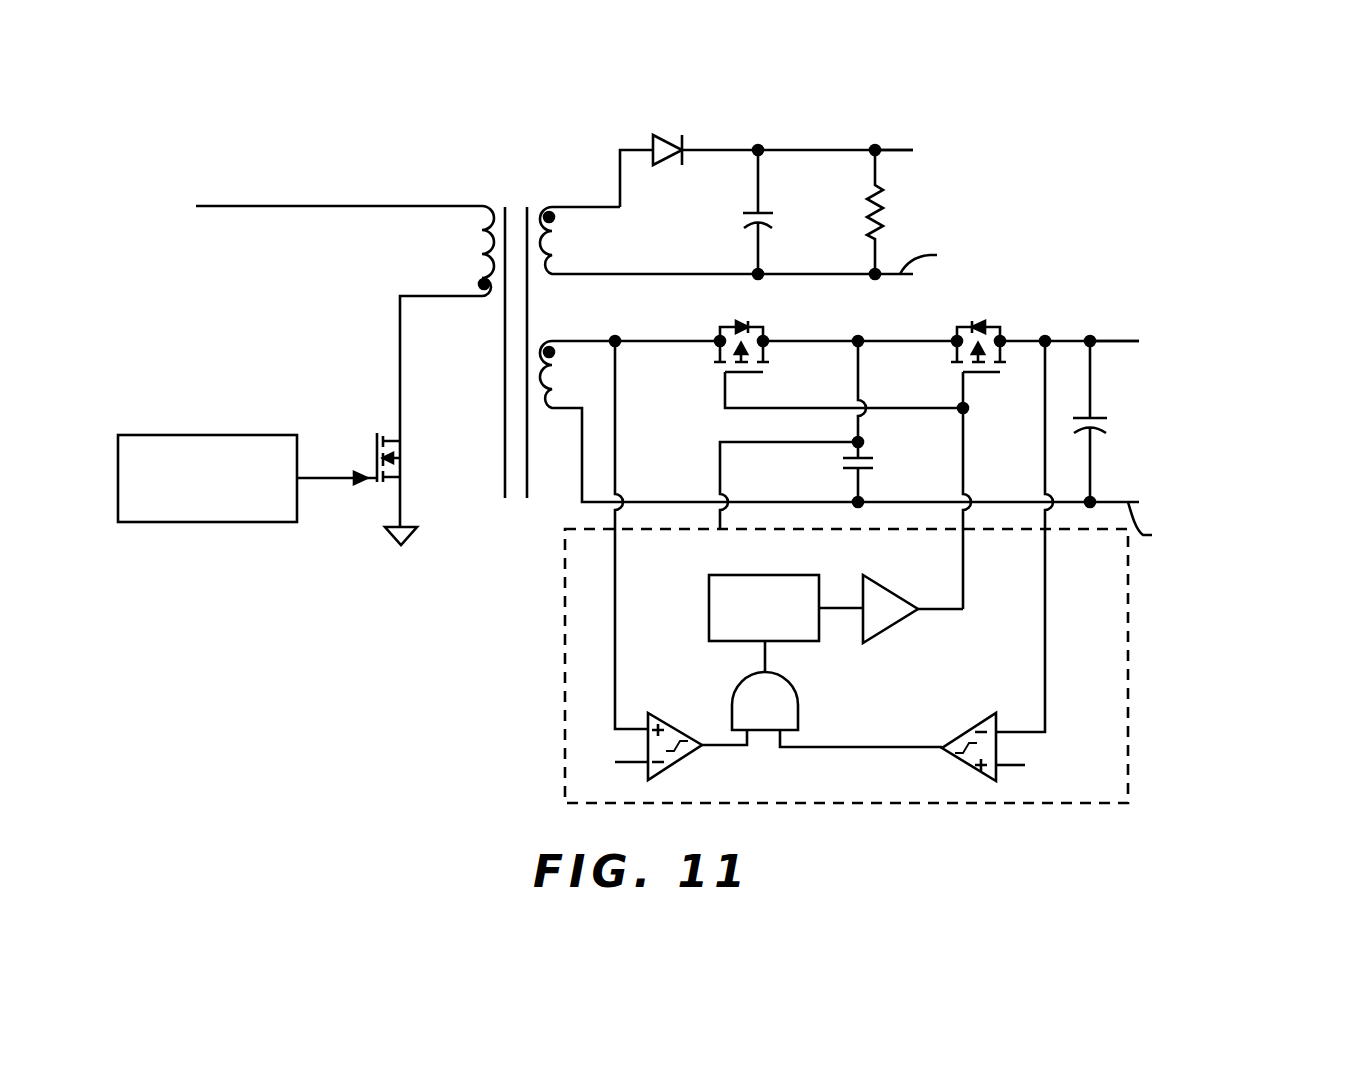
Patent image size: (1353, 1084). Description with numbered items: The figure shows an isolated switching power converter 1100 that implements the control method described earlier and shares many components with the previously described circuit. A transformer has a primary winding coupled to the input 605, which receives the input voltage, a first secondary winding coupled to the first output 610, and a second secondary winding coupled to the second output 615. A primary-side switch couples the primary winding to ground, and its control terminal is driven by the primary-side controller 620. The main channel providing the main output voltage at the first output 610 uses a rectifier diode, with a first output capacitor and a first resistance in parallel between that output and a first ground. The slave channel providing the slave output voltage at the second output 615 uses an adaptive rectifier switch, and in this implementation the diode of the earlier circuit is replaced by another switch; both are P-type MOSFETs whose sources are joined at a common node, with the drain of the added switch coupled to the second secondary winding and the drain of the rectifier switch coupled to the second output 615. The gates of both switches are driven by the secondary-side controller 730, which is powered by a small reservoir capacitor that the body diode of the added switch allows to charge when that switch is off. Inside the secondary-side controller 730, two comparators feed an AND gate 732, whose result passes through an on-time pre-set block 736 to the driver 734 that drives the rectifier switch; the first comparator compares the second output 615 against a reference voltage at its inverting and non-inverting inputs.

The input 605 is at (198, 206).
The first output 610 is at (903, 150).
The second output 615 is at (1118, 341).
The primary-side controller 620 is at (195, 434).
The secondary-side controller 730 is at (565, 707).
The AND gate 732 is at (733, 706).
The driver 734 is at (897, 592).
The on-time pre-set block 736 is at (781, 575).
The power converter 1100 is at (266, 570).